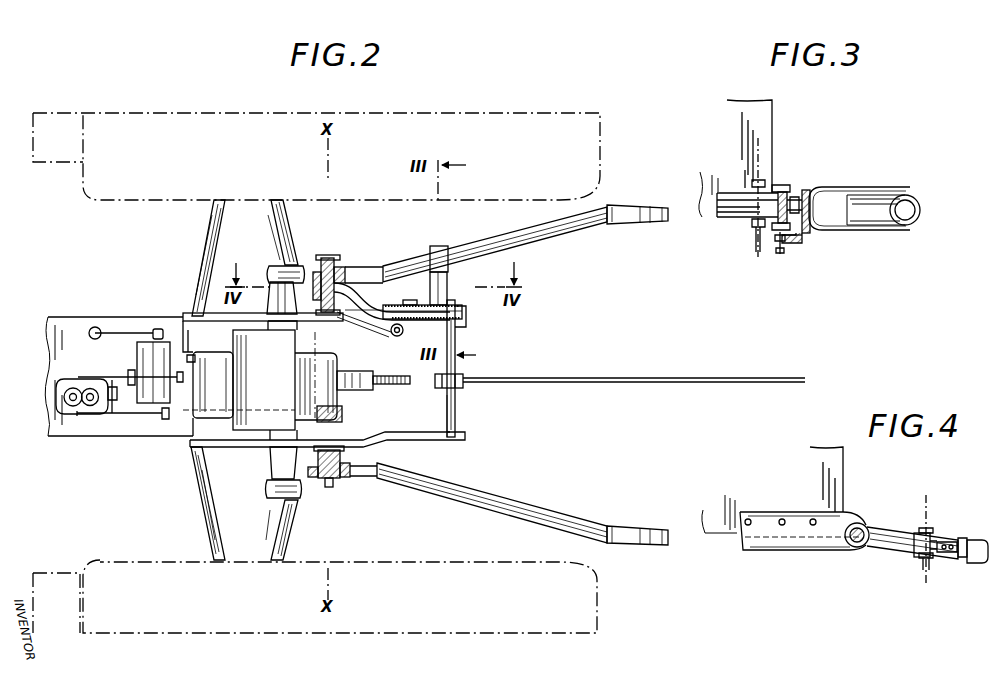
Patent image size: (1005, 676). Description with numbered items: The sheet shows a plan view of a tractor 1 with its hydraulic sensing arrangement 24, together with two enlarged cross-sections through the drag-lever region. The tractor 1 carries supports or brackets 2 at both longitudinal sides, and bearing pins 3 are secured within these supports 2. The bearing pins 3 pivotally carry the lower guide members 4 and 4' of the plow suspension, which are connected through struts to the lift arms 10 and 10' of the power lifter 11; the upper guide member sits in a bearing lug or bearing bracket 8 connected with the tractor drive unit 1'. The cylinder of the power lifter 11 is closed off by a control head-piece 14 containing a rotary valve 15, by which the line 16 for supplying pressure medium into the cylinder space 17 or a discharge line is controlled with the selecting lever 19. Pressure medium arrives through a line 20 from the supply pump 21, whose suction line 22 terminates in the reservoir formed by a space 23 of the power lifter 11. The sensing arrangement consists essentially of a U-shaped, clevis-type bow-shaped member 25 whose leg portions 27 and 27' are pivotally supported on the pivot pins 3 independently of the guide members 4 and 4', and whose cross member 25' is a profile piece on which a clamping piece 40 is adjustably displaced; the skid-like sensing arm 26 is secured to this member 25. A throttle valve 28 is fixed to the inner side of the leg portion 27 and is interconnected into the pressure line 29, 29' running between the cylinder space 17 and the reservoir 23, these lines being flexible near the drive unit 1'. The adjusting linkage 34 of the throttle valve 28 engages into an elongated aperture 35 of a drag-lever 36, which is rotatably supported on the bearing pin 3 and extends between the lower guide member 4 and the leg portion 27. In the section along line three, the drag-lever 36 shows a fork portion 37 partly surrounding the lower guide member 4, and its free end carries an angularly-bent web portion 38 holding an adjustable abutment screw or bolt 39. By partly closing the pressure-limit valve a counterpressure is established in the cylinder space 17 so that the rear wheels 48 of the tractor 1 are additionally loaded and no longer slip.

In FIG. 2, the tractor 1 is at (243, 380).
In FIG. 3, the tractor 1 is at (735, 158).
In FIG. 4, the tractor 1 is at (771, 509).
In FIG. 2, the tractor drive unit 1' is at (58, 360).
In FIG. 2, the supports or brackets 2 is at (187, 313).
In FIG. 4, the supports or brackets 2 is at (774, 552).
In FIG. 2, the bearing pins 3 is at (340, 265).
In FIG. 4, the bearing pins 3 is at (855, 548).
In FIG. 2, the lower guide member 4 is at (525, 243).
In FIG. 3, the lower guide member 4 is at (892, 206).
In FIG. 2, the lower guide member 4' is at (504, 504).
In FIG. 2, the bearing lug or bearing bracket 8 is at (358, 390).
In FIG. 2, the lift arm 10 is at (292, 259).
In FIG. 2, the lift arm 10' is at (292, 504).
In FIG. 2, the power lifter 11 is at (242, 385).
In FIG. 2, the control head-piece 14 is at (150, 328).
In FIG. 2, the rotary valve 15 is at (137, 360).
In FIG. 2, the line 16 is at (175, 425).
In FIG. 2, the cylinder space 17 is at (388, 389).
In FIG. 2, the selecting lever 19 is at (96, 327).
In FIG. 2, the line 20 is at (88, 377).
In FIG. 2, the supply pump 21 is at (58, 396).
In FIG. 2, the suction line 22 is at (125, 438).
In FIG. 2, the space (reservoir) 23 is at (334, 423).
In FIG. 2, the sensing arrangement 24 is at (442, 416).
In FIG. 2, the bow-shaped member 25 is at (472, 372).
In FIG. 3, the bow-shaped member 25 is at (730, 217).
In FIG. 2, the cross member 25' is at (481, 375).
In FIG. 2, the skid-like guide member or sensing arm 26 is at (634, 369).
In FIG. 2, the leg portion 27 is at (476, 318).
In FIG. 2, the leg portion 27' is at (462, 452).
In FIG. 2, the throttle valve 28 is at (397, 336).
In FIG. 3, the throttle valve 28 is at (766, 223).
In FIG. 4, the throttle valve 28 is at (915, 548).
In FIG. 2, the pressure line 29 is at (195, 341).
In FIG. 3, the pressure line 29 is at (742, 249).
In FIG. 4, the pressure line 29 is at (911, 581).
In FIG. 2, the pressure line section 29' is at (364, 337).
In FIG. 3, the pressure line section 29' is at (783, 190).
In FIG. 4, the pressure line section 29' is at (918, 526).
In FIG. 2, the adjusting linkage 34 is at (413, 300).
In FIG. 3, the adjusting linkage 34 is at (794, 198).
In FIG. 4, the adjusting linkage 34 is at (932, 558).
In FIG. 4, the elongated aperture 35 is at (951, 541).
In FIG. 2, the drag-lever 36 is at (380, 268).
In FIG. 3, the drag-lever 36 is at (806, 195).
In FIG. 4, the drag-lever 36 is at (872, 530).
In FIG. 2, the fork portion 37 is at (440, 246).
In FIG. 3, the fork portion 37 is at (858, 191).
In FIG. 4, the fork portion 37 is at (965, 540).
In FIG. 2, the angularly-bent web portion 38 is at (455, 300).
In FIG. 3, the angularly-bent web portion 38 is at (800, 246).
In FIG. 4, the angularly-bent web portion 38 is at (976, 565).
In FIG. 3, the screw or bolt 39 is at (781, 256).
In FIG. 2, the clamping piece 40 is at (463, 386).
In FIG. 2, the rear wheels 48 is at (58, 165).